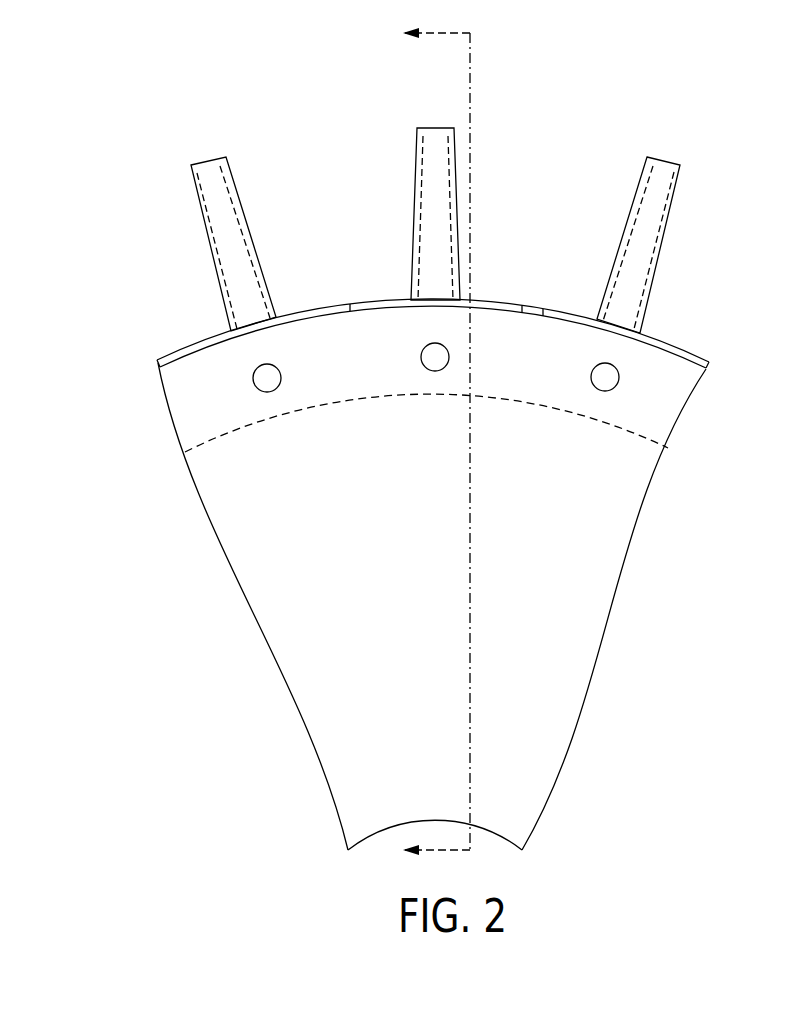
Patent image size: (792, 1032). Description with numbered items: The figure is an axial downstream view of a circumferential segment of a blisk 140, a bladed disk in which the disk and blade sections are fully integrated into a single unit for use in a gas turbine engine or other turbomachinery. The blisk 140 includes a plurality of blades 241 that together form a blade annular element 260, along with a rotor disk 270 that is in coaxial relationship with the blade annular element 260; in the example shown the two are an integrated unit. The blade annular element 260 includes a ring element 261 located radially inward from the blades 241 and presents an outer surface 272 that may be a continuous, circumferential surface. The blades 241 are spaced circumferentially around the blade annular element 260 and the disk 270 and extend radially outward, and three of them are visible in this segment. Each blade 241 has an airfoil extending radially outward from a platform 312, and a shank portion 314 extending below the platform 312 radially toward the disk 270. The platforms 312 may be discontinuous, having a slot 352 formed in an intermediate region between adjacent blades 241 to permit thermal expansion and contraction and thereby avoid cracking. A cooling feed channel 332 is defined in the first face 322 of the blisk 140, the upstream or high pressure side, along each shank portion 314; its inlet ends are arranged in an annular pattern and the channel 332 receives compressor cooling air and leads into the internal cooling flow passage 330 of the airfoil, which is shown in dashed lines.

The blisk 140 is at (575, 105).
The blade 241 is at (205, 162).
The blade annular element 260 is at (188, 425).
The ring element 261 is at (670, 425).
The rotor disk 270 is at (565, 712).
The outer surface 272 is at (700, 368).
The platform 312 is at (541, 305).
The shank portion 314 is at (270, 348).
The first face 322 is at (557, 617).
The internal cooling flow passage 330 is at (247, 223).
The cooling feed channel 332 is at (268, 392).
The slot 352 is at (351, 303).